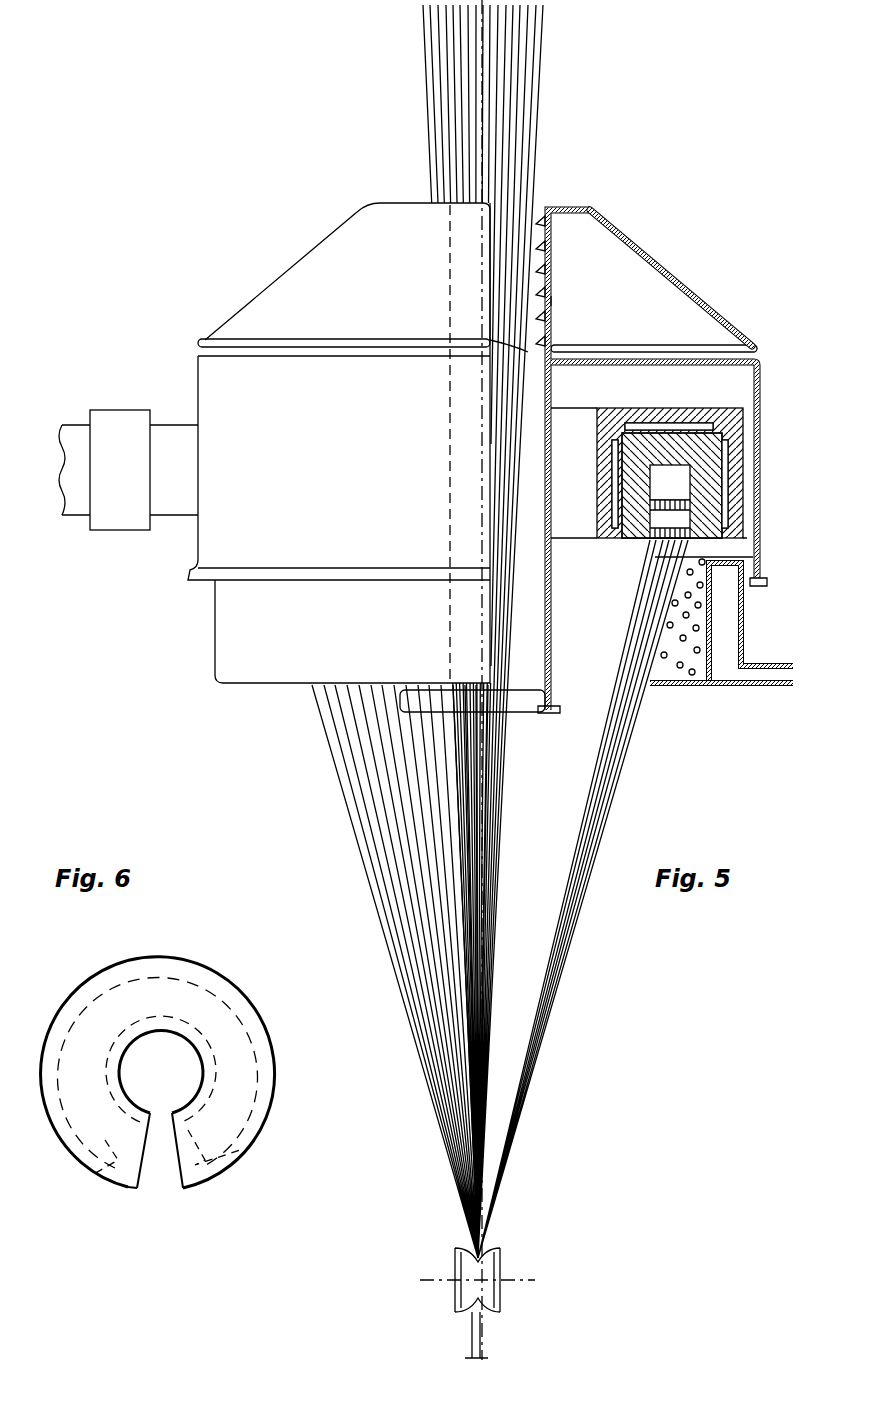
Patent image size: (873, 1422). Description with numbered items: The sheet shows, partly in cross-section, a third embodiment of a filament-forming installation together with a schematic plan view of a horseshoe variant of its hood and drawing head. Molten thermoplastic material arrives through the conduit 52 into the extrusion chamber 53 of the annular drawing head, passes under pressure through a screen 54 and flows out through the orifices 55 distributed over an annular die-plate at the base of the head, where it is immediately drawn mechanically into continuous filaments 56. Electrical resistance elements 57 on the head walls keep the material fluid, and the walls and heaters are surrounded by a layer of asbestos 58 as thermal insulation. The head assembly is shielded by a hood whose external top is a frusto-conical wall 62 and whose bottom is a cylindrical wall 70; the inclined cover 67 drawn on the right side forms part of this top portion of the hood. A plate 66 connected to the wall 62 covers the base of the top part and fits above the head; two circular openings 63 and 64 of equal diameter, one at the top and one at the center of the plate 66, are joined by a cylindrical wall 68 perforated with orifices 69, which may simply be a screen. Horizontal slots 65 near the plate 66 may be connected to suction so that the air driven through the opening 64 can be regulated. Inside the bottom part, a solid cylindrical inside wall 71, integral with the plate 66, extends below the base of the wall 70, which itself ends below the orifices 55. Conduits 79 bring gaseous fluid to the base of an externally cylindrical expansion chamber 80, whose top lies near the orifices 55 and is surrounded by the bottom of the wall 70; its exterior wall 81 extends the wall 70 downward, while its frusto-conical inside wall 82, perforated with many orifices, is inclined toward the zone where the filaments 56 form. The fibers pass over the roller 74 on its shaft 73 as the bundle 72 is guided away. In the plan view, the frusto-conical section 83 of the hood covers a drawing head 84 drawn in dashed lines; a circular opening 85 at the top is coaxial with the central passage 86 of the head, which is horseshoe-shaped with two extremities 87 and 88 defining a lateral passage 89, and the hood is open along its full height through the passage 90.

In FIG. 5, the conduit 52 is at (78, 432).
In FIG. 5, the extrusion chamber 53 is at (683, 480).
In FIG. 5, the screen 54 is at (660, 520).
In FIG. 5, the orifices 55 is at (665, 543).
In FIG. 5, the continuous filaments 56 is at (345, 769).
In FIG. 5, the electrical resistance elements 57 is at (726, 455).
In FIG. 5, the layer of asbestos 58 is at (738, 510).
In FIG. 5, the frusto-conical wall 62 is at (303, 280).
In FIG. 5, the circular opening 63 is at (548, 205).
In FIG. 5, the circular opening 64 is at (527, 350).
In FIG. 5, the horizontal slots 65 is at (198, 344).
In FIG. 5, the plate 66 is at (692, 348).
In FIG. 5, the inclined cover 67 is at (660, 268).
In FIG. 5, the cylindrical wall 68 is at (550, 300).
In FIG. 5, the orifices 69 is at (550, 266).
In FIG. 5, the cylindrical wall 70 is at (203, 540).
In FIG. 5, the solid inside wall 71 is at (552, 680).
In FIG. 5, the fiber bundle 72 is at (432, 101).
In FIG. 5, the roller shaft 73 is at (478, 1340).
In FIG. 5, the guide roller 74 is at (488, 1268).
In FIG. 5, the conduits 79 is at (778, 672).
In FIG. 5, the expansion chamber 80 is at (727, 665).
In FIG. 5, the exterior wall 81 is at (745, 624).
In FIG. 5, the inside wall 82 is at (702, 660).
In FIG. 6, the frusto-conical section 83 is at (67, 1000).
In FIG. 6, the drawing head 84 is at (135, 995).
In FIG. 6, the circular opening 85 is at (176, 1045).
In FIG. 6, the central passage 86 is at (255, 1012).
In FIG. 6, the extremity 87 is at (100, 1172).
In FIG. 6, the extremity 88 is at (250, 1160).
In FIG. 6, the lateral passage 89 is at (130, 1180).
In FIG. 6, the passage 90 is at (160, 1160).